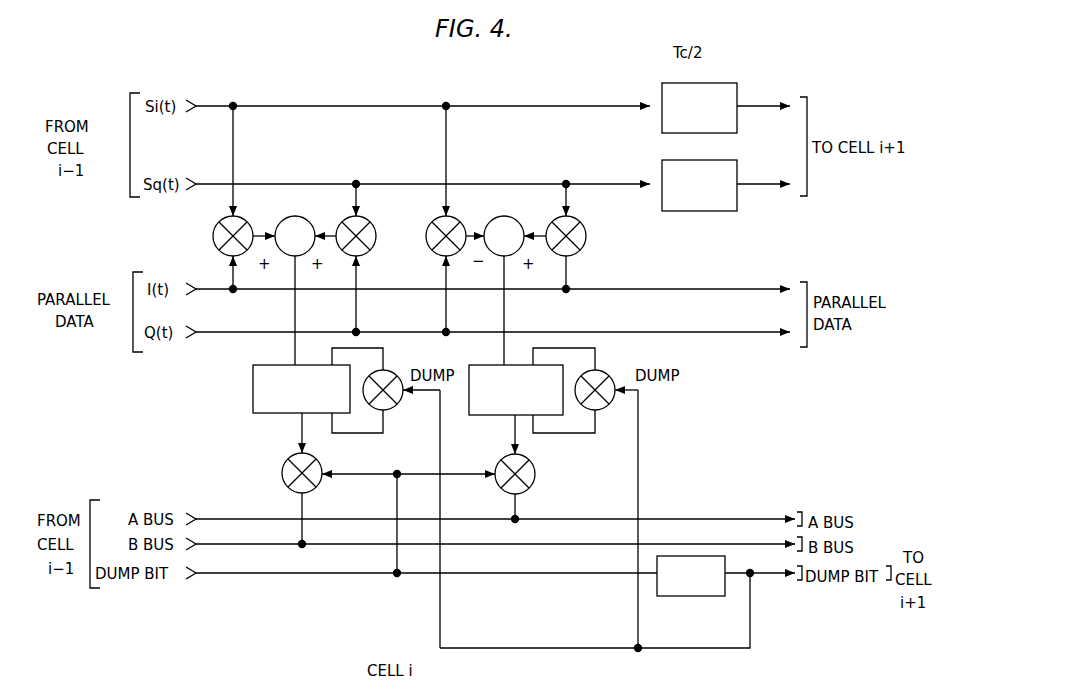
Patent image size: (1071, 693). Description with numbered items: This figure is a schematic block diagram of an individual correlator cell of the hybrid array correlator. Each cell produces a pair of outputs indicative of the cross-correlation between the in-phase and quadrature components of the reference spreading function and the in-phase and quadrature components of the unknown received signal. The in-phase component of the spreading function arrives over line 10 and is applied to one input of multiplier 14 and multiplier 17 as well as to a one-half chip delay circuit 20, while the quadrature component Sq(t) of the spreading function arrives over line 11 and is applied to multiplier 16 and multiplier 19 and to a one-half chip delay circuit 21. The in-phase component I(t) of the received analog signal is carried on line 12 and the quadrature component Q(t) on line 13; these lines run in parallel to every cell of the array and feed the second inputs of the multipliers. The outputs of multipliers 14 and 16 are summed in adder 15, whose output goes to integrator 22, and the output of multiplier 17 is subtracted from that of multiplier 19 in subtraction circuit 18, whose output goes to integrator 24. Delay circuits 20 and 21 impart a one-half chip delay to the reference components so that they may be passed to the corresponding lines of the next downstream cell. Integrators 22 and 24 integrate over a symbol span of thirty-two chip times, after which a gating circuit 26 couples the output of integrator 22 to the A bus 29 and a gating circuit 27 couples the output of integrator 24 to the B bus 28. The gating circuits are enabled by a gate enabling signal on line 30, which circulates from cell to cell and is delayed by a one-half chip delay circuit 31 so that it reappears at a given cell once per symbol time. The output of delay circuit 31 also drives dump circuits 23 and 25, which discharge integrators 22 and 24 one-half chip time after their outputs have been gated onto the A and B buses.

The line 10 is at (412, 106).
The line 11 is at (418, 184).
The line 12 is at (407, 289).
The line 13 is at (400, 332).
The multiplier 14 is at (245, 221).
The adder 15 is at (310, 221).
The multiplier 16 is at (370, 221).
The multiplier 17 is at (460, 222).
The subtraction circuit 18 is at (517, 222).
The multiplier 19 is at (585, 226).
The one-half chip delay circuit 20 is at (660, 128).
The one-half chip delay circuit 21 is at (690, 211).
The integrator 22 is at (253, 388).
The dump circuit 23 is at (390, 370).
The integrator 24 is at (480, 365).
The dump circuit 25 is at (604, 371).
The gating circuit 26 is at (288, 462).
The gating circuit 27 is at (533, 466).
The B bus 28 is at (245, 519).
The A bus 29 is at (362, 544).
The line 30 is at (355, 573).
The one-half chip delay circuit 31 is at (684, 596).